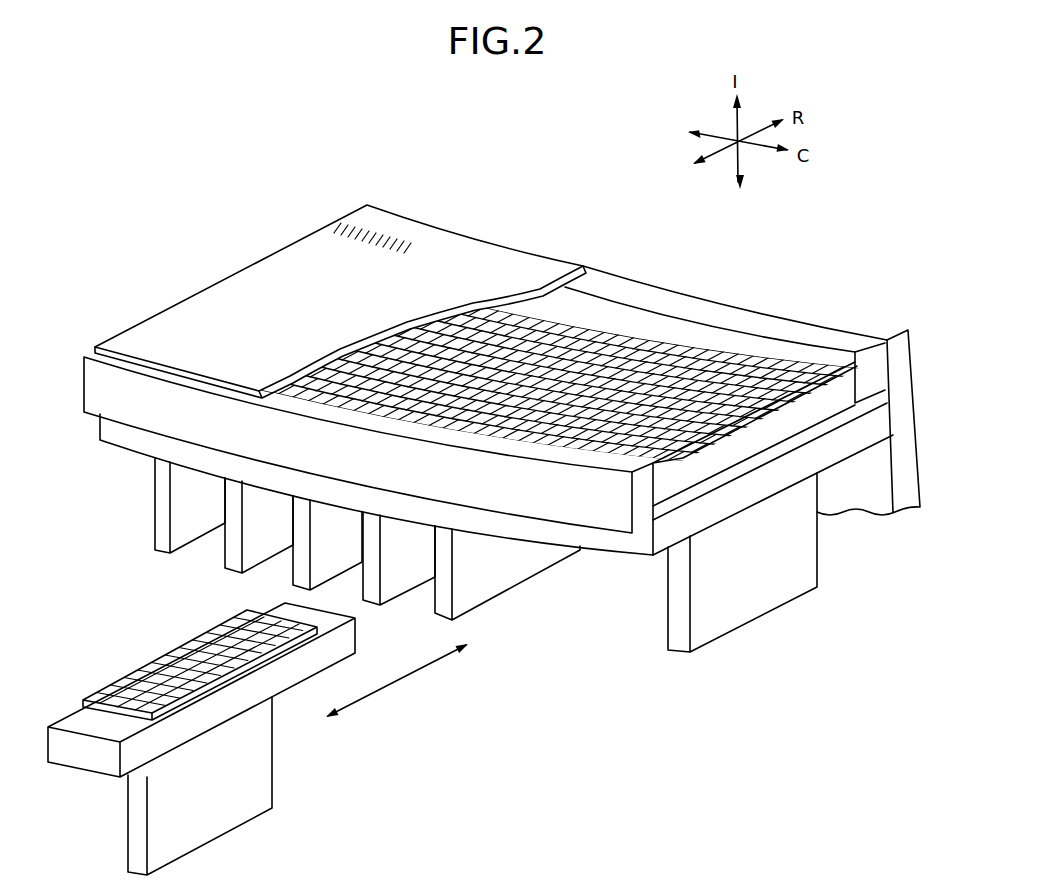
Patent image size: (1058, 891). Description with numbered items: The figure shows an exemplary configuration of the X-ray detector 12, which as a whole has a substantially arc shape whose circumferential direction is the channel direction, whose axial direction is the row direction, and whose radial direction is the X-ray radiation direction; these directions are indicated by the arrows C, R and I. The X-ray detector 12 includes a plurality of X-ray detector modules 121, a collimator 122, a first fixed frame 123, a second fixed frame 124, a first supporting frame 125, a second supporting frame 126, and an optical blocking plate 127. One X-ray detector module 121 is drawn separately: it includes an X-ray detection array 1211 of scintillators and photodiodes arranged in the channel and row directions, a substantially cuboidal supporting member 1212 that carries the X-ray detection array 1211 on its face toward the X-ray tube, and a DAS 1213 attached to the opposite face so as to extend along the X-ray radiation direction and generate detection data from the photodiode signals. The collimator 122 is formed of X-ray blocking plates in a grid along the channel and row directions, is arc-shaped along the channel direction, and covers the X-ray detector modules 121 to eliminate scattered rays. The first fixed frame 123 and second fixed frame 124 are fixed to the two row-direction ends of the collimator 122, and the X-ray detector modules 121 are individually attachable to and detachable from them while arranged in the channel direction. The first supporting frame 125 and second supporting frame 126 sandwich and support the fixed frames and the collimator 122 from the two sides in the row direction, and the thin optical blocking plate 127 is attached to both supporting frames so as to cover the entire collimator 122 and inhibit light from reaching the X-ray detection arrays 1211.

The X-ray detector 12 is at (433, 200).
The X-ray detector module 121 is at (98, 670).
The X-ray detection array 1211 is at (197, 658).
The supporting member 1212 is at (83, 752).
The DAS 1213 is at (211, 815).
The collimator 122 is at (797, 420).
The first fixed frame 123 is at (872, 377).
The second fixed frame 124 is at (672, 485).
The first supporting frame 125 is at (704, 298).
The second supporting frame 126 is at (82, 385).
The optical blocking plate 127 is at (248, 290).